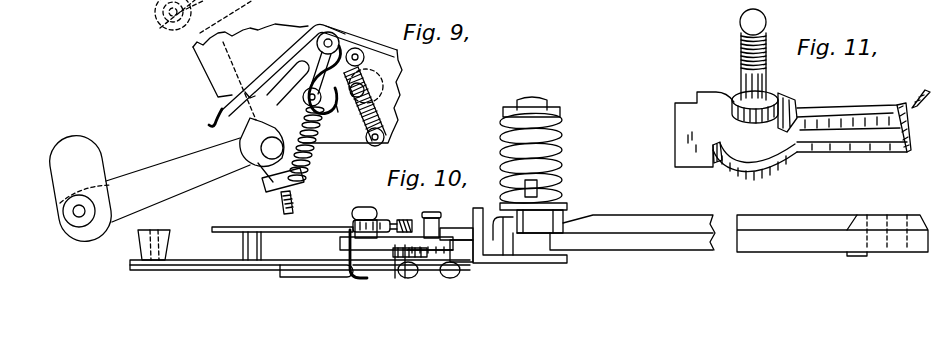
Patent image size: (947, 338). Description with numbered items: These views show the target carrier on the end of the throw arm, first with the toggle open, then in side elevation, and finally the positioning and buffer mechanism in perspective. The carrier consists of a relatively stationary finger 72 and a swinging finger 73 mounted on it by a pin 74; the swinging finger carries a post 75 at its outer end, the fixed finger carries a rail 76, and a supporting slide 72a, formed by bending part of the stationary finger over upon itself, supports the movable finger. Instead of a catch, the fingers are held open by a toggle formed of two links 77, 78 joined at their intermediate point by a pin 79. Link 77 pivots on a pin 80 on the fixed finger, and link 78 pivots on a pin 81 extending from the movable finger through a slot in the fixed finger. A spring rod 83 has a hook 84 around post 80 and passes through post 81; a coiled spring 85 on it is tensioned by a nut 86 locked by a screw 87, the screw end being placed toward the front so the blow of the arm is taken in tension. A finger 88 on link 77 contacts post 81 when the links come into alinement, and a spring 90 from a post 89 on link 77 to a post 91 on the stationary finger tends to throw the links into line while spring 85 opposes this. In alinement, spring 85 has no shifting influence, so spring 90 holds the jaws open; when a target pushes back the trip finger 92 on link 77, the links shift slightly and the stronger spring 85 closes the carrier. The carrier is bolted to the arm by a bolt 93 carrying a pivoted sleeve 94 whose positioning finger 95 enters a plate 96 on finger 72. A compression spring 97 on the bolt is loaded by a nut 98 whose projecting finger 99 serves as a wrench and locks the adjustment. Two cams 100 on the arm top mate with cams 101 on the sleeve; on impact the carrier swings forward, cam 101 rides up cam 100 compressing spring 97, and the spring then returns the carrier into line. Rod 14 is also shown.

In FIG. 10, the bar 14 is at (638, 223).
In FIG. 11, the bar 14 is at (856, 153).
In FIG. 9, the stationary finger 72 is at (250, 72).
In FIG. 10, the stationary finger 72 is at (192, 271).
In FIG. 10, the supporting slide 72a is at (320, 276).
In FIG. 9, the swinging finger 73 is at (178, 180).
In FIG. 10, the swinging finger 73 is at (230, 261).
In FIG. 9, the pin 74 is at (383, 84).
In FIG. 9, the post 75 is at (79, 205).
In FIG. 10, the post 75 is at (165, 232).
In FIG. 10, the rail 76 is at (282, 243).
In FIG. 10, the link 77 is at (450, 262).
In FIG. 9, the link 78 is at (266, 124).
In FIG. 10, the link 78 is at (430, 253).
In FIG. 9, the pin 79 is at (288, 83).
In FIG. 10, the pin 79 is at (445, 229).
In FIG. 9, the pin 80 is at (336, 31).
In FIG. 10, the pin 80 is at (441, 216).
In FIG. 9, the pin 81 is at (317, 106).
In FIG. 10, the pin 81 is at (430, 212).
In FIG. 9, the spring rod 83 is at (322, 63).
In FIG. 10, the spring rod 83 is at (361, 207).
In FIG. 9, the hook 84 is at (327, 32).
In FIG. 10, the coiled spring 85 is at (405, 220).
In FIG. 9, the nut 86 is at (305, 183).
In FIG. 10, the nut 86 is at (383, 219).
In FIG. 9, the screw 87 is at (270, 192).
In FIG. 9, the finger 88 is at (334, 108).
In FIG. 9, the post 89 is at (364, 57).
In FIG. 9, the spring 90 is at (380, 110).
In FIG. 9, the post 91 is at (384, 137).
In FIG. 9, the trip finger 92 is at (214, 112).
In FIG. 10, the trip finger 92 is at (347, 238).
In FIG. 10, the bolt 93 is at (547, 184).
In FIG. 11, the bolt 93 is at (766, 45).
In FIG. 10, the sleeve 94 is at (545, 214).
In FIG. 10, the positioning finger 95 is at (493, 216).
In FIG. 11, the positioning finger 95 is at (733, 100).
In FIG. 10, the plate 96 is at (516, 189).
In FIG. 10, the compression spring 97 is at (562, 147).
In FIG. 10, the nut 98 is at (560, 111).
In FIG. 10, the projecting finger 99 is at (531, 107).
In FIG. 10, the cams 100 is at (553, 243).
In FIG. 11, the cams 100 is at (790, 108).
In FIG. 11, the cams 101 is at (787, 93).